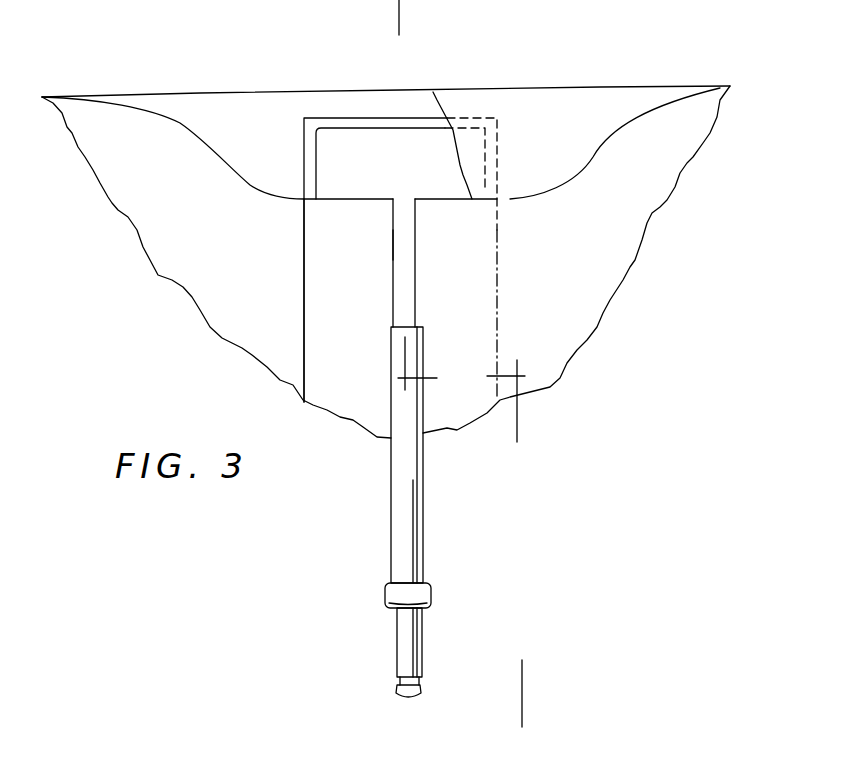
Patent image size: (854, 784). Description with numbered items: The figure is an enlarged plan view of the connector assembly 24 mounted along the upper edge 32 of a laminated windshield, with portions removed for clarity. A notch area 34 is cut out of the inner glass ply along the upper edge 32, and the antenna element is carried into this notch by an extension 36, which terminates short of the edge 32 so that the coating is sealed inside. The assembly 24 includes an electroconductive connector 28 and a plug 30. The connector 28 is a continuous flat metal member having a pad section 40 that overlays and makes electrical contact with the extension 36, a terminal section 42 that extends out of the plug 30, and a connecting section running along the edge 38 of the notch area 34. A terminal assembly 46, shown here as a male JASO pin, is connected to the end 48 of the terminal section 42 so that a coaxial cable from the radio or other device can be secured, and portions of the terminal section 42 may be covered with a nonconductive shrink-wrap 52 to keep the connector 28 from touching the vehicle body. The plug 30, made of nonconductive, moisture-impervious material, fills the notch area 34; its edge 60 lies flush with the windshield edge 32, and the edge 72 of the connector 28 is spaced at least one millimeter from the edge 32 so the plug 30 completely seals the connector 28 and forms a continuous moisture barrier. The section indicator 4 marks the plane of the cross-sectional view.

The section line 4- 4 is at (538, 717).
The connector assembly 24 is at (280, 63).
The electroconductive connector 28 is at (392, 245).
The plug member 30 is at (540, 107).
The upper edge 32 is at (60, 97).
The notch area 34 is at (180, 100).
The extension 36 is at (307, 372).
The edge 38 is at (283, 197).
The pad section 40 is at (413, 137).
The terminal section 42 is at (415, 253).
The terminal assembly 46 is at (396, 630).
The end 48 is at (393, 563).
The shrink-wrap 52 is at (392, 458).
The edge 60 is at (337, 92).
The edge 72 is at (372, 127).